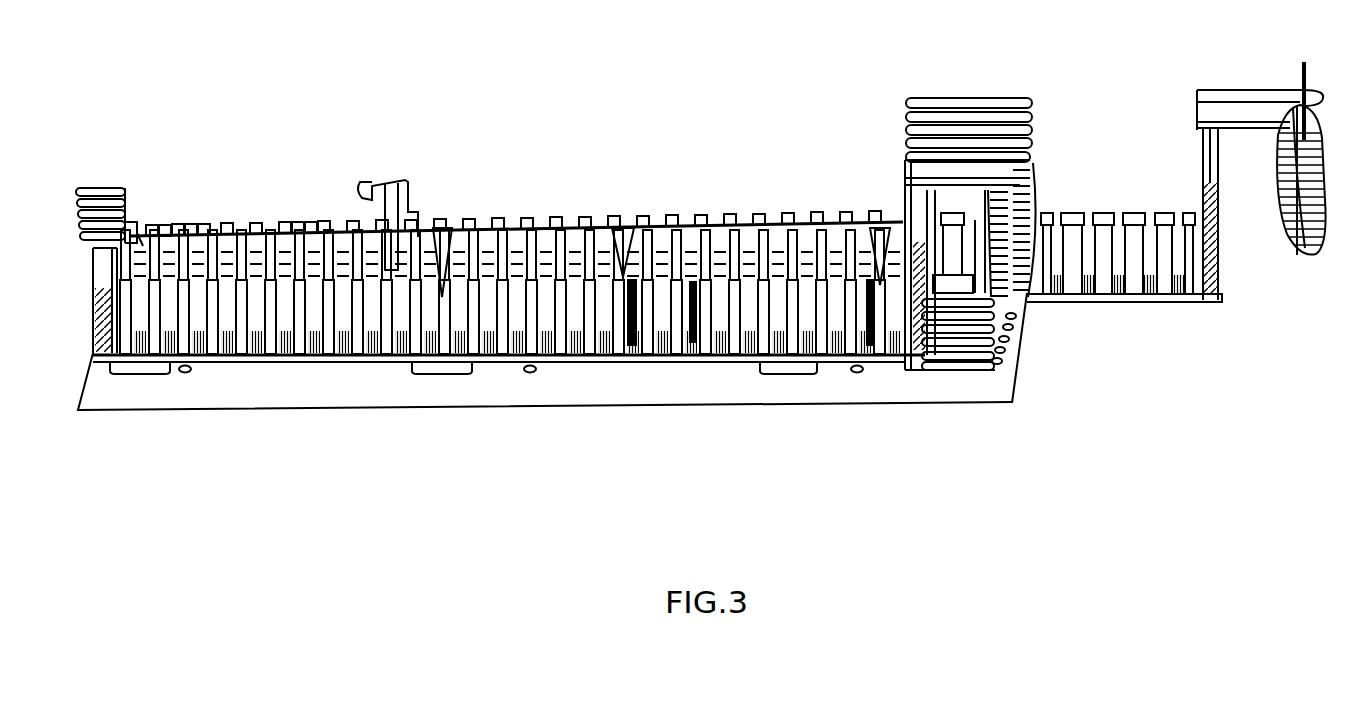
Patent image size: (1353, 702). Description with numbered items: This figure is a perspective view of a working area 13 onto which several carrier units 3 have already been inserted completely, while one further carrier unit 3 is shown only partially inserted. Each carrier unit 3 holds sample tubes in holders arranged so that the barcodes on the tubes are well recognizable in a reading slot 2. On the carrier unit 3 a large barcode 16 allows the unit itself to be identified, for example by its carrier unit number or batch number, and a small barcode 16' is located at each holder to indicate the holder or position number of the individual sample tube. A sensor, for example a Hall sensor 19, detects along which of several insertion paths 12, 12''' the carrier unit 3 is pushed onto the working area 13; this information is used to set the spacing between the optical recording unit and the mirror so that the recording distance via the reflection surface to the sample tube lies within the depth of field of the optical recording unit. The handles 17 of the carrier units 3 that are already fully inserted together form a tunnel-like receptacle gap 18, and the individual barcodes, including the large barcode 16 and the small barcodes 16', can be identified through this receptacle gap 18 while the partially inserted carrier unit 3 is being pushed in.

The reading slot 2 is at (1114, 255).
The carrier unit 3 is at (1072, 300).
The insertion path 12 is at (958, 399).
The insertion path 12''' is at (1041, 331).
The working area 13 is at (636, 388).
The large barcode 16 is at (1260, 294).
The small barcode 16' is at (1186, 396).
The handle 17 is at (1297, 235).
The receptacle gap 18 is at (967, 205).
The Hall sensor 19 is at (1003, 372).